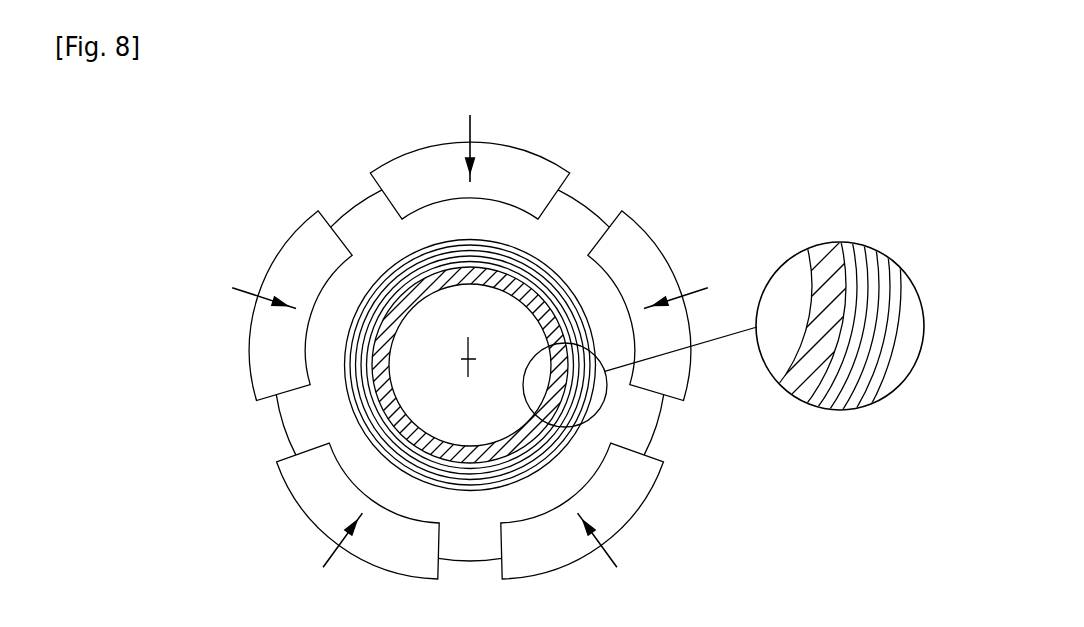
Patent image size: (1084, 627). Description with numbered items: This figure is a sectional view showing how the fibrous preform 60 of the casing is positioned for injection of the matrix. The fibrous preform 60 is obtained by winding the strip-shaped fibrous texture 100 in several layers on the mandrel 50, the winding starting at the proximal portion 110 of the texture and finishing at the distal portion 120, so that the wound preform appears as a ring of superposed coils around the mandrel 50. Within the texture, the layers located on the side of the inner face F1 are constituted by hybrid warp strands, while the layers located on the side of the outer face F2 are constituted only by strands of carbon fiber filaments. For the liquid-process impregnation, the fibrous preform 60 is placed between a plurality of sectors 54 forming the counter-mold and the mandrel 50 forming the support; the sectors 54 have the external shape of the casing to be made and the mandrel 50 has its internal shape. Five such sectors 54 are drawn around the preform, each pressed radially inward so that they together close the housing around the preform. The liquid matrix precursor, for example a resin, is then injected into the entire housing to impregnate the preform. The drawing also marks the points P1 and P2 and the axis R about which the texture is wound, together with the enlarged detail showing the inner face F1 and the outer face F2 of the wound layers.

The sectors 54 is at (534, 166).
The fibrous preform 60 is at (543, 262).
The fibrous texture 100 is at (470, 351).
The distal portion 120 is at (497, 243).
The proximal portion 110 is at (478, 276).
The mandrel 50 is at (474, 365).
The first portion P1 is at (484, 276).
The second portion P2 is at (522, 265).
The rotation axis R is at (462, 359).
The inner face F1 is at (842, 311).
The outer face F2 is at (897, 335).